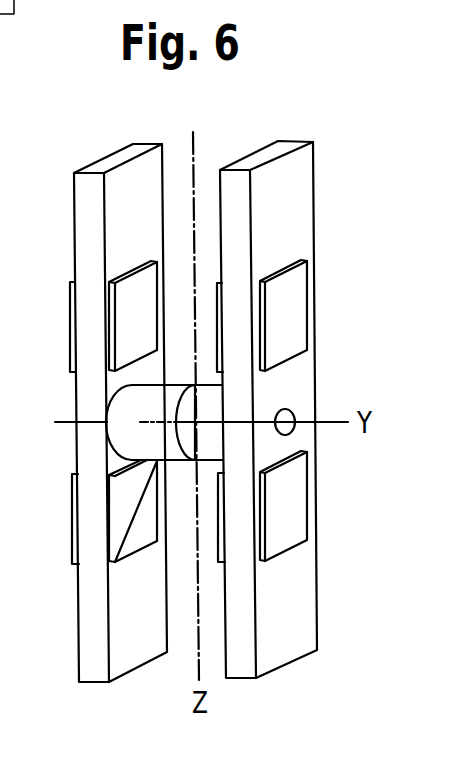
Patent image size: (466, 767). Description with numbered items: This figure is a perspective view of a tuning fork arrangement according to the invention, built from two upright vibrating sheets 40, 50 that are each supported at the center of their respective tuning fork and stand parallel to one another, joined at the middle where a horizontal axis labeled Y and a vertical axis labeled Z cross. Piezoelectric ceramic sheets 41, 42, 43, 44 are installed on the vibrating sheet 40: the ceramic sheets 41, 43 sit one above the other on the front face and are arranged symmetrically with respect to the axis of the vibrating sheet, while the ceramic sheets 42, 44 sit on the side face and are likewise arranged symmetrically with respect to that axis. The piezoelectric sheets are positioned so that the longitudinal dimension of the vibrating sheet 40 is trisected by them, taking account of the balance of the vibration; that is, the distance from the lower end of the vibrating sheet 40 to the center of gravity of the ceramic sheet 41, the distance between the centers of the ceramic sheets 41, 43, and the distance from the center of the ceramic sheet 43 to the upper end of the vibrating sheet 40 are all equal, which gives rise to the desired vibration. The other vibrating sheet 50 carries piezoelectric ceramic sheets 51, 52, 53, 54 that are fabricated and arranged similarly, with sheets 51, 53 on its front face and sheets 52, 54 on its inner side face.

The vibrating sheet 40 is at (86, 633).
The piezoelectric ceramic sheet 41 is at (112, 558).
The piezoelectric ceramic sheet 42 is at (77, 526).
The piezoelectric ceramic sheet 43 is at (122, 346).
The piezoelectric ceramic sheet 44 is at (70, 312).
The vibrating sheet 50 is at (295, 600).
The piezoelectric ceramic sheet 51 is at (293, 520).
The piezoelectric ceramic sheet 52 is at (220, 553).
The piezoelectric ceramic sheet 53 is at (293, 328).
The piezoelectric ceramic sheet 54 is at (216, 286).